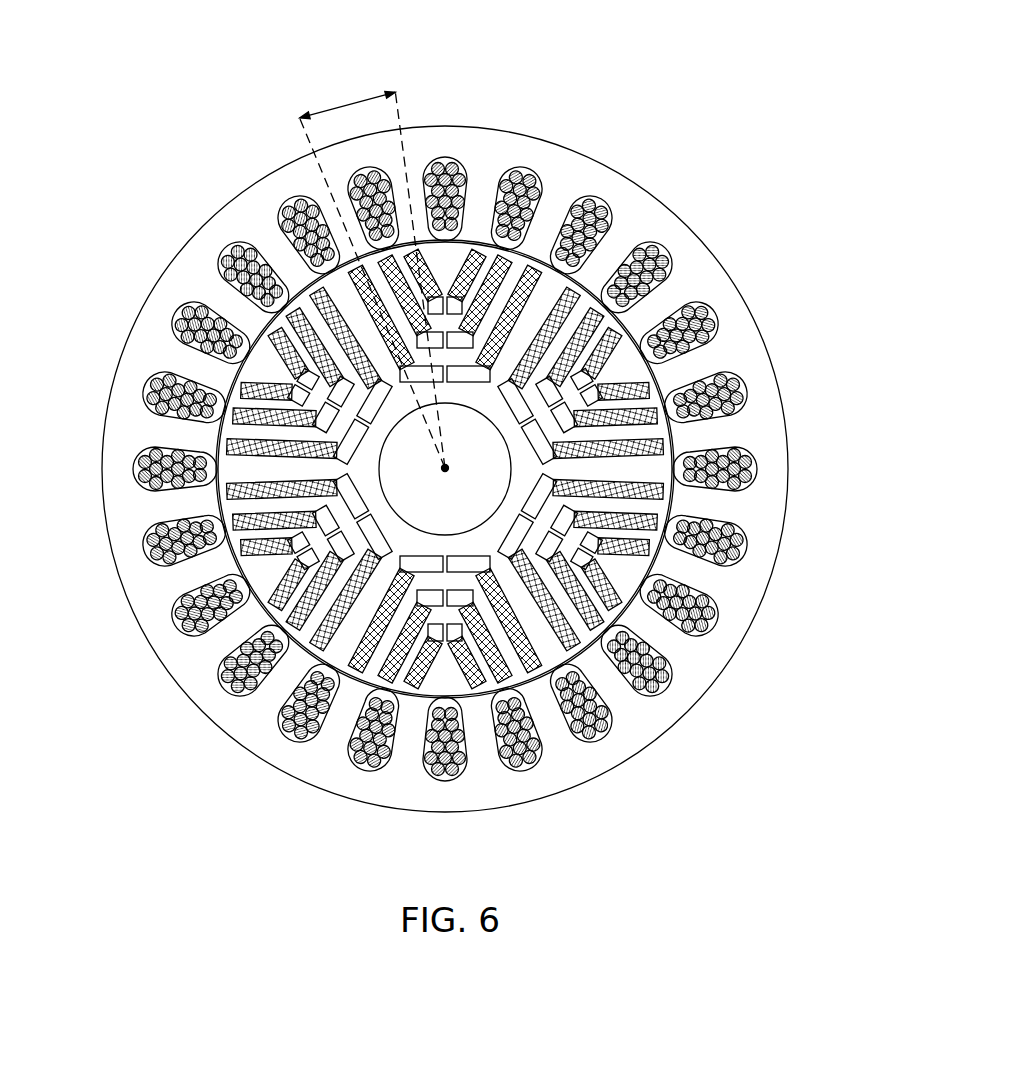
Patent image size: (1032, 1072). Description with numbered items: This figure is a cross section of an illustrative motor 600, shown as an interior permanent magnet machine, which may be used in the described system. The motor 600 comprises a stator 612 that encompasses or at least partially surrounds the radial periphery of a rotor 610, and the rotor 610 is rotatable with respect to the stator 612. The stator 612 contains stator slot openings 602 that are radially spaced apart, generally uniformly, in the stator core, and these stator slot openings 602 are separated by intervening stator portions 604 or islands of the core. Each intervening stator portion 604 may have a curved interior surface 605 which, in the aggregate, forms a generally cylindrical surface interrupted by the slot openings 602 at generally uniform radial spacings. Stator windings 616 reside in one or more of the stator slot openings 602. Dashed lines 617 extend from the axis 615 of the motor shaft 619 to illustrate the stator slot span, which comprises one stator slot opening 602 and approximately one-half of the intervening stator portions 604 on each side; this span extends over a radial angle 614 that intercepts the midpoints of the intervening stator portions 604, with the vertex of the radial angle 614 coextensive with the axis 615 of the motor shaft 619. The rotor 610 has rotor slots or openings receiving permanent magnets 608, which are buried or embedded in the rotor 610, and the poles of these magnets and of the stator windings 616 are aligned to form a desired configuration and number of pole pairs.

The motor 600 is at (798, 84).
The stator slot openings 602 is at (340, 200).
The intervening stator portions 604 is at (408, 165).
The curved interior surface 605 is at (552, 235).
The permanent magnets 608 is at (355, 290).
The rotor 610 is at (471, 492).
The stator 612 is at (677, 222).
The radial angle 614 is at (343, 95).
The axis 615 is at (447, 468).
The stator windings 616 is at (648, 242).
The dashed lines 617 is at (400, 92).
The motor shaft 619 is at (465, 524).